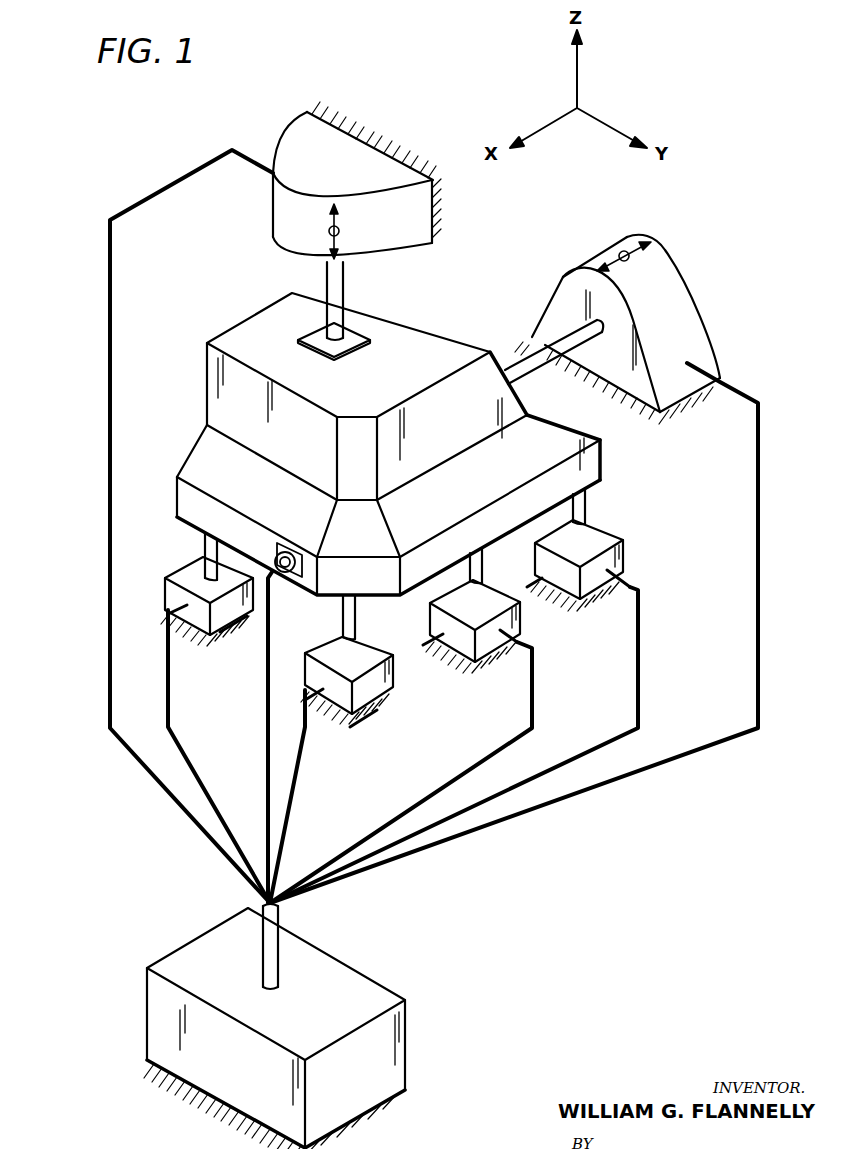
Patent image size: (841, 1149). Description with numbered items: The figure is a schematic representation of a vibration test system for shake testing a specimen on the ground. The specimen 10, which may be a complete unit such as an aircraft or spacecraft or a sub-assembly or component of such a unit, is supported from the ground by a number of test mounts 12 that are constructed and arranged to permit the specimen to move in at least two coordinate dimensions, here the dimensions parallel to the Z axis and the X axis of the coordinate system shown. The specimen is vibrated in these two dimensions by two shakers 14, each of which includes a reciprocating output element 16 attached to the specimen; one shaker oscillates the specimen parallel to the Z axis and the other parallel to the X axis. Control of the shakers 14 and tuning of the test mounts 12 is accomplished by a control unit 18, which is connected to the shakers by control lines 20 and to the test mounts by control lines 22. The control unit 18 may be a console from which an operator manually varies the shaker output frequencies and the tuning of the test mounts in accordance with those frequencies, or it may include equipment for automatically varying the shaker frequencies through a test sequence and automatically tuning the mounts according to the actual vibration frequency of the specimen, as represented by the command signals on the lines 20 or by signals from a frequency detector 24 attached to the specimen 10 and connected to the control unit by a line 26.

The specimen 10 is at (225, 338).
The test mount 12 is at (172, 577).
The shaker 14 is at (293, 145).
The reciprocating output element 16 is at (338, 296).
The control unit 18 is at (183, 955).
The control line 20 is at (110, 473).
The control line 22 is at (168, 683).
The frequency detector 24 is at (277, 553).
The line 26 is at (267, 723).